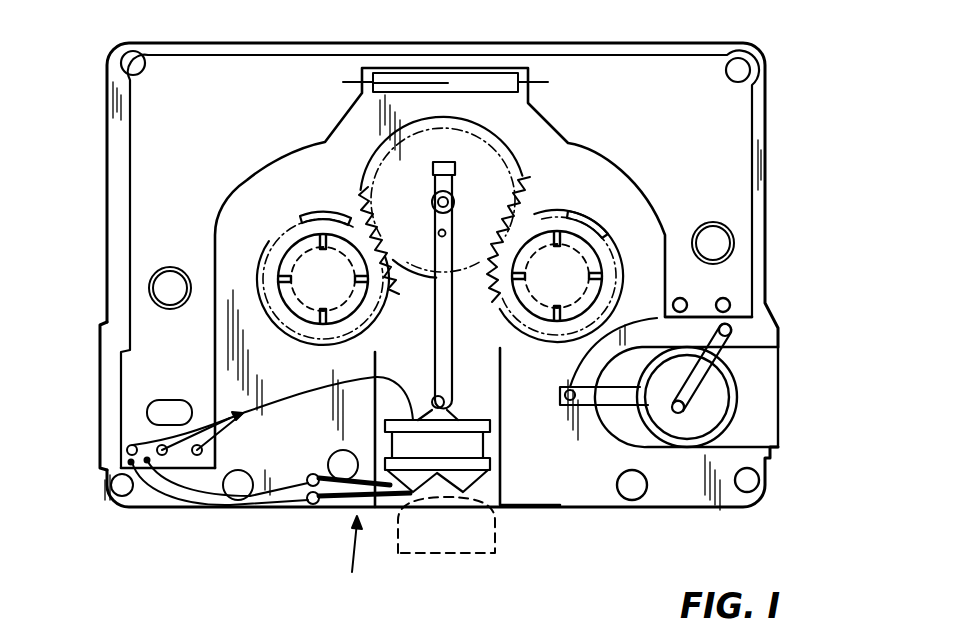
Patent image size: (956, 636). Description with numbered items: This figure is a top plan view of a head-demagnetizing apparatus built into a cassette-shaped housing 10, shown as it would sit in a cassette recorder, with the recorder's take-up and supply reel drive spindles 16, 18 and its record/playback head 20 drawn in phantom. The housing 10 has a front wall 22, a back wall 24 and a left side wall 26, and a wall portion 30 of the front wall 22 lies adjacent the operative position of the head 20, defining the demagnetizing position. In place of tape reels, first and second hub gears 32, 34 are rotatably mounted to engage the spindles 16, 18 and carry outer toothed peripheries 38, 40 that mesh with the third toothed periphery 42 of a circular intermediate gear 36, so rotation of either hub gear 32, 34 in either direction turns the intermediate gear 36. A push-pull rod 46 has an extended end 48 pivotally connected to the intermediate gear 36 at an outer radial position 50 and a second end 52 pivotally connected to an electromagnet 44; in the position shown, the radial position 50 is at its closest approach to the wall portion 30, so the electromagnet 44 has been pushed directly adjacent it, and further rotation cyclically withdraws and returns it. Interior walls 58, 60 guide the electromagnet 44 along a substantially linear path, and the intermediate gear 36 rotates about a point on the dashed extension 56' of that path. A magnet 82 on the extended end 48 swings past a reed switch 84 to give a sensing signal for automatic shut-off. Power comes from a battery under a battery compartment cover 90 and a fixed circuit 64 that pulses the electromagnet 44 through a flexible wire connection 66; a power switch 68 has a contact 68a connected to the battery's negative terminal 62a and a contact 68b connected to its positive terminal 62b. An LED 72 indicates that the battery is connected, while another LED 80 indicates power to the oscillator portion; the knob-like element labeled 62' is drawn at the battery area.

The cassette-shaped housing 10 is at (108, 205).
The take-up reel drive spindle 16 is at (290, 263).
The supply reel drive spindle 18 is at (598, 268).
The record/playback head 20 is at (497, 548).
The front wall 22 is at (152, 510).
The back wall 24 is at (388, 44).
The left side wall 26 is at (100, 400).
The wall portion 30 is at (370, 546).
The first hub gear 32 is at (303, 217).
The second hub gear 34 is at (583, 240).
The intermediate gear 36 is at (478, 145).
The first outer toothed periphery 38 is at (348, 214).
The second outer toothed periphery 40 is at (543, 217).
The third outer toothed periphery 42 is at (530, 173).
The electromagnet 44 is at (484, 446).
The push-pull rod 46 is at (447, 344).
The extended end 48 is at (455, 168).
The outer radial position 50 is at (439, 234).
The second end 52 is at (446, 402).
The extension of path 56' is at (470, 203).
The interior wall 58 is at (300, 382).
The interior wall 60 is at (500, 477).
The dial knob 62' is at (734, 397).
The negative terminal of battery 62a is at (635, 420).
The positive terminal of battery 62b is at (678, 413).
The circuit 64 is at (205, 494).
The flexible wire connection 66 is at (397, 378).
The power switch 68 is at (338, 525).
The switch contact 68a is at (318, 474).
The switch contact 68b is at (325, 504).
The LED 72 is at (152, 285).
The LED 80 is at (750, 228).
The magnet 82 is at (432, 173).
The reed switch 84 is at (488, 73).
The battery compartment cover 90 is at (763, 357).